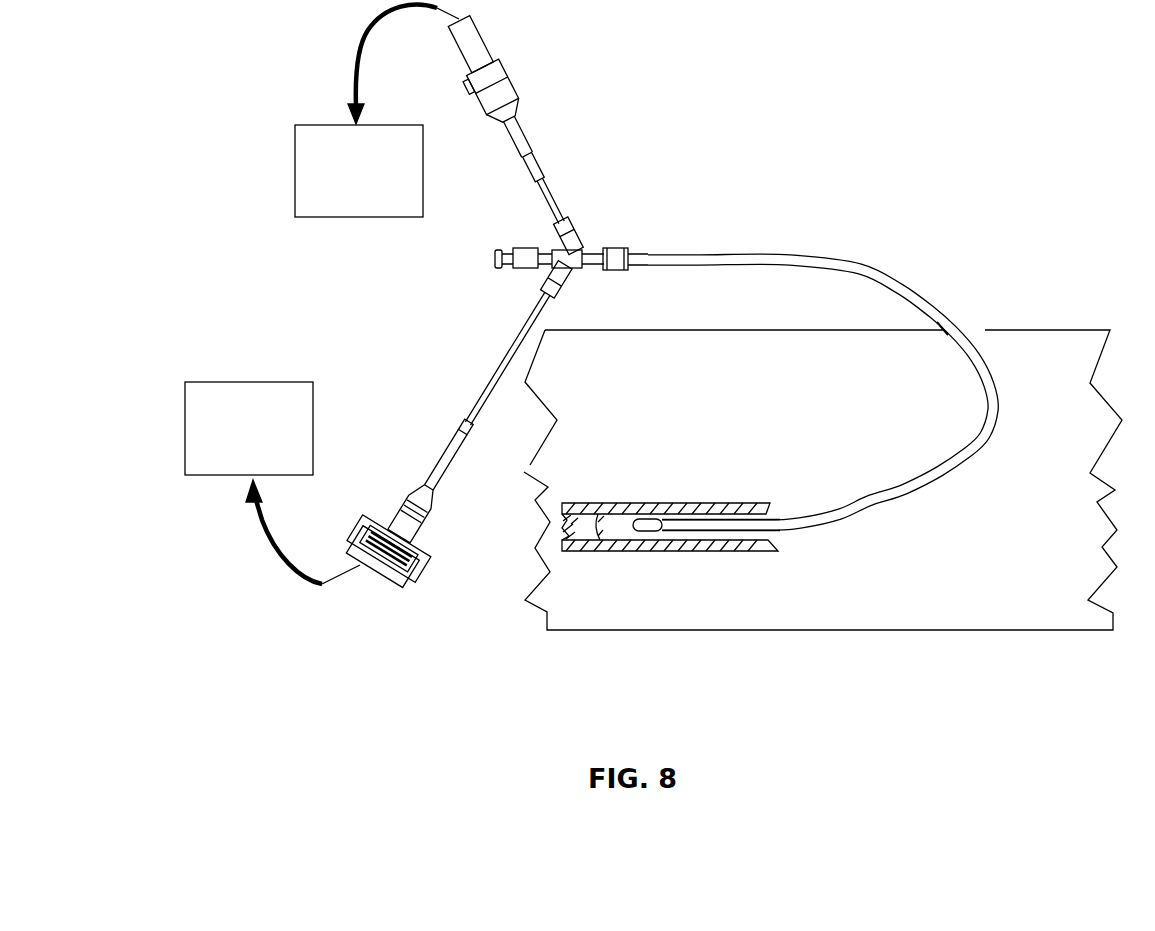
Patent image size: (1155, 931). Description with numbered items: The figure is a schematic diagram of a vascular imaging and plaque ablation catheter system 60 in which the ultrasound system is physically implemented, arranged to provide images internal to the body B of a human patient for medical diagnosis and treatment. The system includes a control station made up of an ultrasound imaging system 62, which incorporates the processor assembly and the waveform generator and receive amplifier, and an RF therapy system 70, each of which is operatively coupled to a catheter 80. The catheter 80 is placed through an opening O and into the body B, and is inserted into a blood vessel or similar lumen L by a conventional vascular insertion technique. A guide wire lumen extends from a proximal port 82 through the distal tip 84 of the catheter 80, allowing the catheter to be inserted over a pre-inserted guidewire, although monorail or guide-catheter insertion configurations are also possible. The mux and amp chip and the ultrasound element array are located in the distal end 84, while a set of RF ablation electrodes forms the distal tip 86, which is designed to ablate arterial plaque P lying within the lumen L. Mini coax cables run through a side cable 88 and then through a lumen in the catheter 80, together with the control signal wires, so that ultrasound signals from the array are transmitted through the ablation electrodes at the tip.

The vascular imaging and plaque ablation catheter system 60 is at (656, 147).
The ultrasound imaging system 62 is at (313, 412).
The RF therapy system 70 is at (295, 141).
The catheter 80 is at (766, 254).
The proximal port 82 is at (494, 260).
The distal tip 84 is at (650, 532).
The distal tip 86 is at (637, 519).
The side cable 88 is at (490, 416).
The body B is at (1090, 322).
The opening O is at (976, 325).
The lumen L is at (706, 503).
The arterial plaque P is at (572, 520).